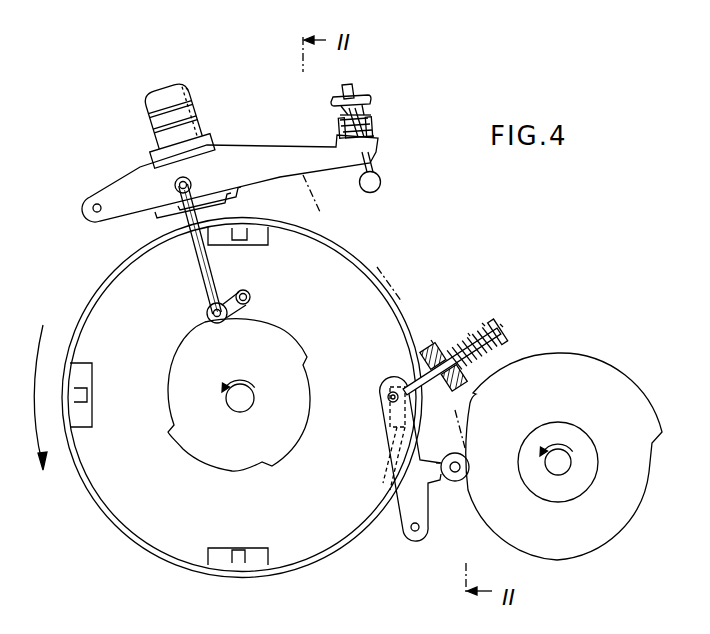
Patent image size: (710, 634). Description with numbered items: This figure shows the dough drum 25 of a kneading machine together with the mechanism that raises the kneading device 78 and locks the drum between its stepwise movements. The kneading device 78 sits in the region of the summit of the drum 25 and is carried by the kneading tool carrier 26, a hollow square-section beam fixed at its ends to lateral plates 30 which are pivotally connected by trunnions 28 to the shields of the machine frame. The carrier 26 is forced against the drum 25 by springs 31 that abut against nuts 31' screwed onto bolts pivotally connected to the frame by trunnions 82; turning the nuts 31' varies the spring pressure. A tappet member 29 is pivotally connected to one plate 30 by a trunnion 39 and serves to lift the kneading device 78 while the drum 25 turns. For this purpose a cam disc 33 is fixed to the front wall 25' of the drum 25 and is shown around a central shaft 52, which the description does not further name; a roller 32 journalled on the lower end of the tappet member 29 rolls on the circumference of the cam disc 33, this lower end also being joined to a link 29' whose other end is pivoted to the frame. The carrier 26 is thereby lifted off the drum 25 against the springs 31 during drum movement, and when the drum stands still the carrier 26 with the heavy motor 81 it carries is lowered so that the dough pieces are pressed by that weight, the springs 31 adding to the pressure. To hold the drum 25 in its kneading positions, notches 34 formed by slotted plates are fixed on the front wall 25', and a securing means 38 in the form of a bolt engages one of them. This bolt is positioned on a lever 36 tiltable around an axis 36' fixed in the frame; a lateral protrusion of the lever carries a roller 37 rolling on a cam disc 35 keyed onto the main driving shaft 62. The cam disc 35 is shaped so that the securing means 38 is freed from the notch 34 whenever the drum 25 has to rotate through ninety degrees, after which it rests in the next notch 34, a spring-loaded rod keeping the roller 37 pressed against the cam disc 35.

The drum 25 is at (228, 398).
The front wall of the drum 25' is at (148, 486).
The kneading tool carrier 26 is at (207, 145).
The trunnion 28 is at (95, 203).
The tappet member 29 is at (188, 249).
The link 29' is at (240, 287).
The lateral plate 30 is at (281, 150).
The spring 31 is at (377, 123).
The nut 31' is at (371, 92).
The roller 32 is at (206, 312).
The cam disc 33 is at (285, 340).
The notch 34 is at (390, 387).
The cam disc 35 is at (628, 400).
The lever 36 is at (394, 459).
The axis 36' is at (390, 540).
The roller 37 is at (455, 481).
The securing means 38 is at (388, 397).
The trunnion 39 is at (175, 184).
The cam shaft 52 is at (223, 397).
The main driving shaft 62 is at (567, 467).
The kneading device 78 is at (132, 134).
The motor 81 is at (186, 88).
The trunnion 82 is at (381, 180).